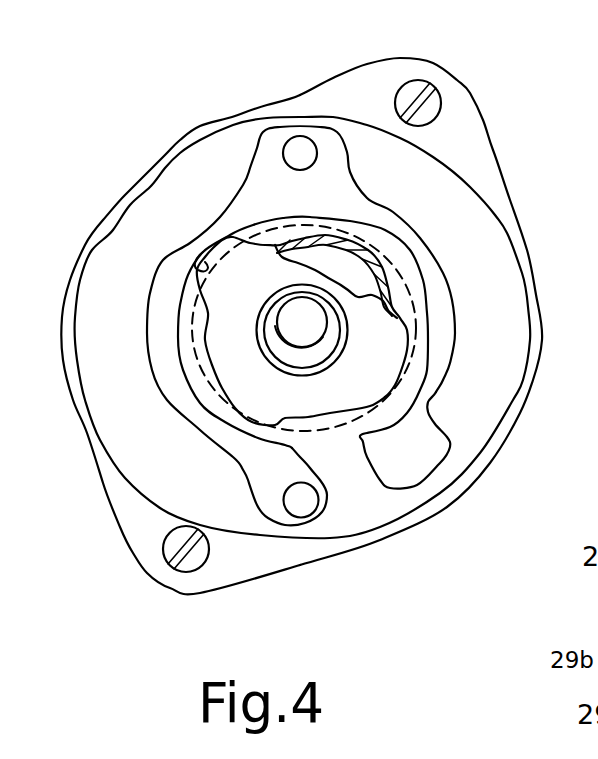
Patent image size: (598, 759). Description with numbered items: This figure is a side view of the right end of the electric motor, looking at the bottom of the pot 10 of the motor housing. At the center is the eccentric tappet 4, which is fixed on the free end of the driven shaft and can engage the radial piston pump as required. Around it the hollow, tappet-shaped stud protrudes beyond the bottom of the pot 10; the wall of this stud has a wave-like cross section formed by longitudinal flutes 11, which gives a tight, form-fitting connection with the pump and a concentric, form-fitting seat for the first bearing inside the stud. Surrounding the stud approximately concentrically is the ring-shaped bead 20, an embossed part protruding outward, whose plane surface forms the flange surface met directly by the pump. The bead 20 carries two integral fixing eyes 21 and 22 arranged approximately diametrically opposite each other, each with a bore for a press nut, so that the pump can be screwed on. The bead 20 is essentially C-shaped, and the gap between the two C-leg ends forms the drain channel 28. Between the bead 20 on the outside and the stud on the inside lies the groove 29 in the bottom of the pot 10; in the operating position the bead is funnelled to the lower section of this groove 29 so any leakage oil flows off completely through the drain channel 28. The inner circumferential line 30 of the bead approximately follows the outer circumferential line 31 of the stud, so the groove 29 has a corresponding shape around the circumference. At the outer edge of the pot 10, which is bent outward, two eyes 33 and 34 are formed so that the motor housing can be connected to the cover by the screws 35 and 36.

The eccentric tappet 4 is at (290, 332).
The pot 10 is at (447, 190).
The longitudinal flutes 11 is at (390, 293).
The ring-shaped bead 20 is at (407, 247).
The fixing eye 21 is at (340, 178).
The fixing eye 22 is at (269, 492).
The drain channel 28 is at (346, 478).
The groove 29 is at (427, 317).
The inner circumferential line 30 is at (205, 262).
The outer circumferential line 31 is at (187, 317).
The eye 33 is at (460, 110).
The eye 34 is at (225, 577).
The screw 35 is at (402, 87).
The screw 36 is at (197, 560).